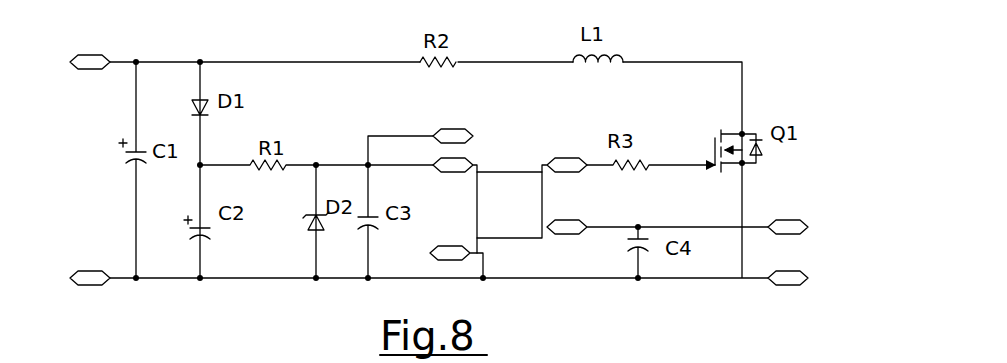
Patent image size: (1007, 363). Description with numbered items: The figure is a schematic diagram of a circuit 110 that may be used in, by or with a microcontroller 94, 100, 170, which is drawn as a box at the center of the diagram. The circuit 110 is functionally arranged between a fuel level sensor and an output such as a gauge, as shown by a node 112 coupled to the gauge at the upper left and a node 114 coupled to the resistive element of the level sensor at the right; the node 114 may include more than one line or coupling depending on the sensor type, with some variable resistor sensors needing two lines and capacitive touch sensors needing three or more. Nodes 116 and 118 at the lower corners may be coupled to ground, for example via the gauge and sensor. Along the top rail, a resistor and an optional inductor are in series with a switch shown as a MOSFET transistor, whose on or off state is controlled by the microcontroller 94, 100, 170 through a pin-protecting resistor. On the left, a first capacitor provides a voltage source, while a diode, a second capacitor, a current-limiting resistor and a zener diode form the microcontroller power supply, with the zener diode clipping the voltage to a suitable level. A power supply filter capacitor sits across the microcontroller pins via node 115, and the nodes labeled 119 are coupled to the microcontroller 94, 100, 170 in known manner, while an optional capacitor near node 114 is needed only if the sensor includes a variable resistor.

The circuit 110 is at (774, 53).
The node 112 is at (86, 55).
The node 114 is at (790, 224).
The node 115 is at (452, 131).
The node 116 is at (90, 275).
The node 118 is at (790, 281).
The nodes 119 is at (567, 160).
The microcontroller 94 is at (583, 212).
The microcontroller 100 is at (583, 212).
The controller 170 is at (527, 185).